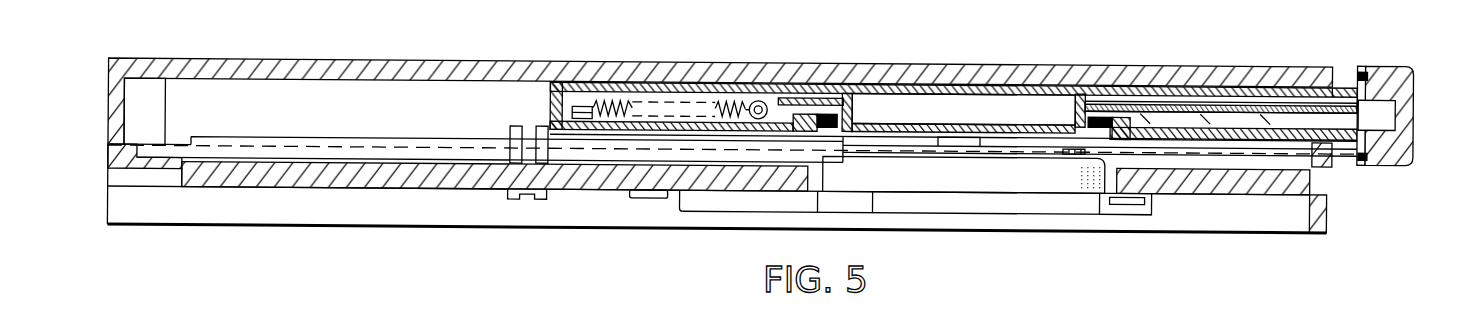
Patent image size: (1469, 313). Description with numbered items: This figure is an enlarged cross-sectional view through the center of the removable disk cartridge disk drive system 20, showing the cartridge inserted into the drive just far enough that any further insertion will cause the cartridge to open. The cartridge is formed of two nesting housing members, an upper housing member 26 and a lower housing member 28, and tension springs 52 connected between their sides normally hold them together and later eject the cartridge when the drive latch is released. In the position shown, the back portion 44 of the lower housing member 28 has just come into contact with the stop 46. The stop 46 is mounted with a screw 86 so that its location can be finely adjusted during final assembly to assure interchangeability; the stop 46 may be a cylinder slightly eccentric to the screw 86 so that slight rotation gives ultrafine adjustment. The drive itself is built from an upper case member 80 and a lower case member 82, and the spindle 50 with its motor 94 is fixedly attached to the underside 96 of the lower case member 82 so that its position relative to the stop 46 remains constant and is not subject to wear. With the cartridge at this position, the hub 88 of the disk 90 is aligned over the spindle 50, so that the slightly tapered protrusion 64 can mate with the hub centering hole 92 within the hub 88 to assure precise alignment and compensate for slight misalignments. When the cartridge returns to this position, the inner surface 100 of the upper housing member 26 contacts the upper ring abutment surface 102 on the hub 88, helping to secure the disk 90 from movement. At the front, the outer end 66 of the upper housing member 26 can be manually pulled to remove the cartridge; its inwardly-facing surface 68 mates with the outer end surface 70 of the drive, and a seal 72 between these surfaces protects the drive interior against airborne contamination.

The removable disk cartridge disk drive system 20 is at (1274, 44).
The upper housing member 26 is at (958, 89).
The lower housing member 28 is at (673, 124).
The backside of the lower housing member 44 is at (550, 97).
The stop 46 is at (548, 147).
The disk drive spindle 50 is at (1047, 175).
The tension springs 52 is at (603, 96).
The protrusion 64 is at (973, 147).
The outer end 66 is at (1413, 108).
The inwardly-facing surface 68 is at (1362, 63).
The outer end surface of the drive 70 is at (1335, 76).
The seal 72 is at (1362, 151).
The upper case member 80 is at (502, 55).
The lower case member 82 is at (387, 208).
The screw 86 is at (518, 196).
The hub 88 is at (993, 118).
The disk 90 is at (1163, 97).
The hub centering hole 92 is at (1017, 118).
The motor 94 is at (898, 201).
The underside of the lower case member 96 is at (1213, 189).
The inner surface of the upper housing member 100 is at (922, 102).
The upper ring abutment surface 102 is at (840, 95).